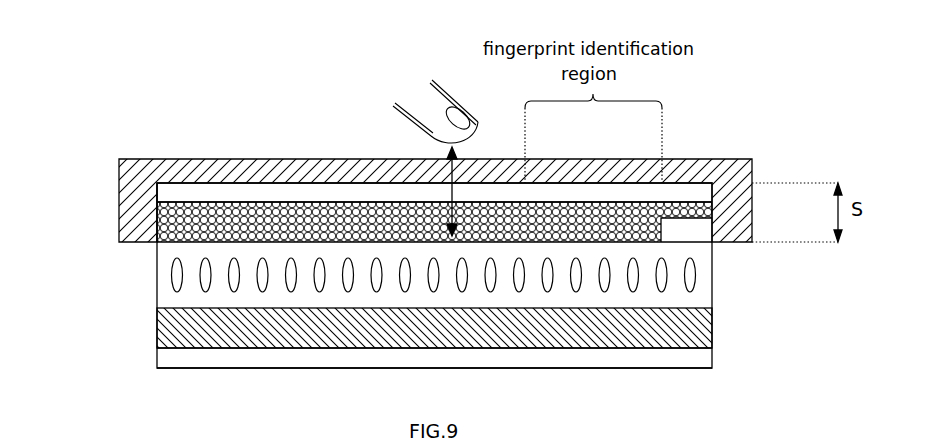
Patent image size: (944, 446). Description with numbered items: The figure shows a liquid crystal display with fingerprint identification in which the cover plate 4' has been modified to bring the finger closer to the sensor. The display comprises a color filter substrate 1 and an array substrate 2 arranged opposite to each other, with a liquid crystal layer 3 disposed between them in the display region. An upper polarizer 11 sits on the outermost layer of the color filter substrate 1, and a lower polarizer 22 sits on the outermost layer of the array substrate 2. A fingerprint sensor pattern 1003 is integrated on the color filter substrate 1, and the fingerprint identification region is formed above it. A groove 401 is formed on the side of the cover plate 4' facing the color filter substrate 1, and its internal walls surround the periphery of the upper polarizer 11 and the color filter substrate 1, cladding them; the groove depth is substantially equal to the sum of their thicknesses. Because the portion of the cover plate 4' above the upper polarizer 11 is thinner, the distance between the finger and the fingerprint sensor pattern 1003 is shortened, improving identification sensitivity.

The cover plate 4' is at (407, 175).
The groove 401 is at (157, 195).
The color filter substrate 1 is at (165, 228).
The upper polarizer 11 is at (702, 195).
The fingerprint sensor pattern 1003 is at (623, 235).
The liquid crystal layer 3 is at (171, 271).
The array substrate 2 is at (163, 320).
The lower polarizer 22 is at (698, 353).